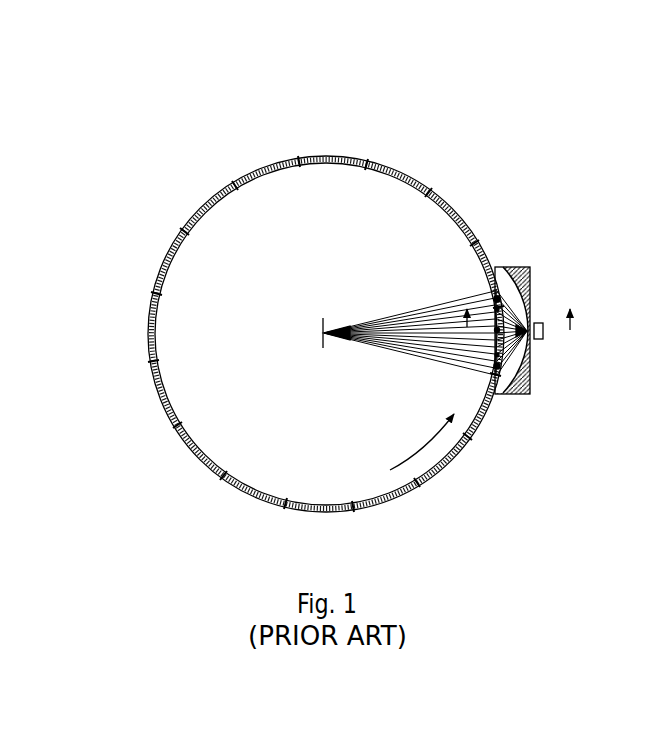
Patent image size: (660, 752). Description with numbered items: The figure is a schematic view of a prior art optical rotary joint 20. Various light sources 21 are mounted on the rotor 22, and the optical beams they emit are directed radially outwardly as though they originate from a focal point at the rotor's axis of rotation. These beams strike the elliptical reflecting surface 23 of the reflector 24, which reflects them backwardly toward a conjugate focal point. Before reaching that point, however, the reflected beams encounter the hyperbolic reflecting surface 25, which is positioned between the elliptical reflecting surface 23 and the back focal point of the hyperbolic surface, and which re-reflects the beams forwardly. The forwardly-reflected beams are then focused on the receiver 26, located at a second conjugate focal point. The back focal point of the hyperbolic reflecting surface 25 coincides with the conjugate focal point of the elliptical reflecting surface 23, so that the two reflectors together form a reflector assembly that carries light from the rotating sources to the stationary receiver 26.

The optical rotary joint 20 is at (428, 124).
The light sources 21 is at (232, 200).
The rotor 22 is at (204, 196).
The elliptical reflecting surface 23 is at (490, 372).
The reflector 24 is at (531, 266).
The hyperbolic reflecting surface 25 is at (522, 308).
The receiver 26 is at (546, 344).